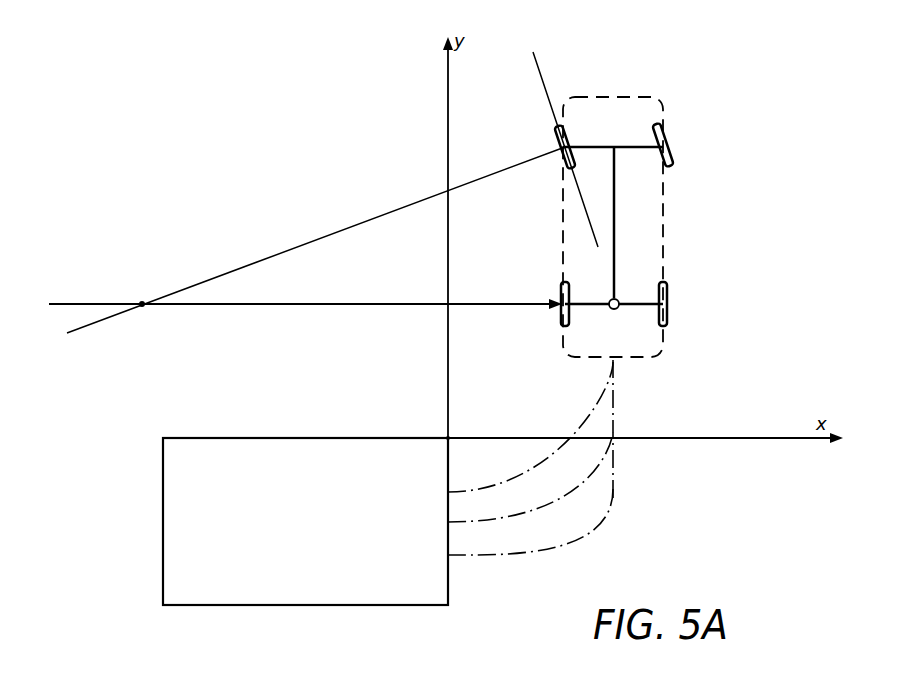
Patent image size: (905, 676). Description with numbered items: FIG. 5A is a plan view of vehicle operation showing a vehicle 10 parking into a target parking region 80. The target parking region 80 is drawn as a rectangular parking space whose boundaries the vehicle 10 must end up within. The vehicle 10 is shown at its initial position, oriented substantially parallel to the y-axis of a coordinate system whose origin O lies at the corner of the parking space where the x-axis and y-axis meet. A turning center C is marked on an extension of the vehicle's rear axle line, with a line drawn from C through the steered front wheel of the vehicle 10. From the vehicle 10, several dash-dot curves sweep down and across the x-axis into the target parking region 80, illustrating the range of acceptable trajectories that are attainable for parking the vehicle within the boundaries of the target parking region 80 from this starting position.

The vehicle 10 is at (665, 218).
The target parking region 80 is at (296, 558).
The turning center C is at (136, 292).
The coordinate origin O is at (438, 427).